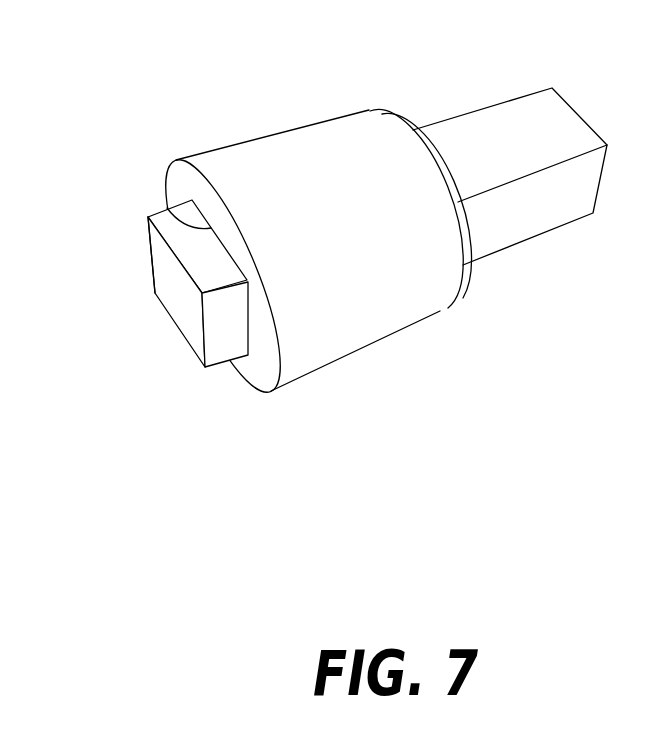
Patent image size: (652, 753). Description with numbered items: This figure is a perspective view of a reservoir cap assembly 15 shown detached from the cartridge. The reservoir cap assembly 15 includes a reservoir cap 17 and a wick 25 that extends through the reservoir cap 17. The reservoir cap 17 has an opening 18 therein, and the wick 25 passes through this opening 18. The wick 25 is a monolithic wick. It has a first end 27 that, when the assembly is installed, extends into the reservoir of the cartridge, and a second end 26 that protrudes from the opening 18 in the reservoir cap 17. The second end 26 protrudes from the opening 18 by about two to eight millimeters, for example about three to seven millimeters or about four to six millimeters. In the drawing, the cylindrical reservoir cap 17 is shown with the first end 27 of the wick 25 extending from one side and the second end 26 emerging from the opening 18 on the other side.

The reservoir cap assembly 15 is at (366, 329).
The reservoir cap 17 is at (272, 403).
The opening 18 is at (167, 208).
The wick 25 is at (175, 305).
The second end 26 is at (137, 238).
The first end 27 is at (457, 101).